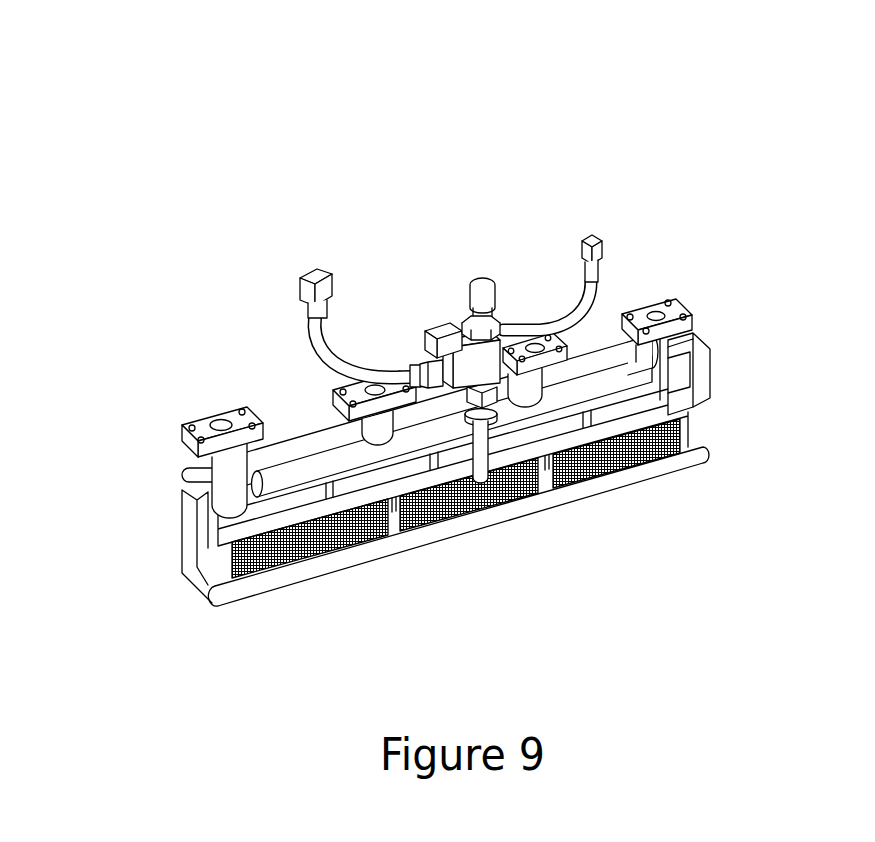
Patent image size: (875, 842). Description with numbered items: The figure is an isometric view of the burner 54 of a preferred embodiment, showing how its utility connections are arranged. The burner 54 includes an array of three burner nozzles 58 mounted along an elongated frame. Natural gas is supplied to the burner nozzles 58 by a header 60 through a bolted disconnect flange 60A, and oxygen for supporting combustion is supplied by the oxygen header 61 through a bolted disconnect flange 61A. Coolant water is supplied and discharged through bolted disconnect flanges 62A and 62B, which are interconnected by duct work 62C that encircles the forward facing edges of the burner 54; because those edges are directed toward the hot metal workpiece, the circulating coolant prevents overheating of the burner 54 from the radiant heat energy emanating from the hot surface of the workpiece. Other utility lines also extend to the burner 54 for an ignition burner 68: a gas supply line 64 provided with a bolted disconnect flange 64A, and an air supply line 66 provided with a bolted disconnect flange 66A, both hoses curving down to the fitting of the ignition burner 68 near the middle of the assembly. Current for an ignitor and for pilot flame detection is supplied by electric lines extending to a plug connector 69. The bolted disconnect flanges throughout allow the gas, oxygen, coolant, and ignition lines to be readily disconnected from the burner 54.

The burner 54 is at (560, 502).
The burner nozzles 58 is at (320, 540).
The header 60 is at (307, 458).
The bolted disconnect flange 60A is at (335, 388).
The oxygen header 61 is at (620, 342).
The bolted disconnect flange 61A is at (600, 342).
The bolted disconnect flange 62A is at (195, 426).
The bolted disconnect flange 62B is at (684, 303).
The duct work 62C is at (710, 372).
The gas supply line 64 is at (362, 360).
The bolted disconnect flange 64A is at (310, 272).
The air supply line 66 is at (546, 320).
The bolted disconnect flange 66A is at (587, 235).
The ignition burner 68 is at (433, 319).
The plug connector 69 is at (468, 281).